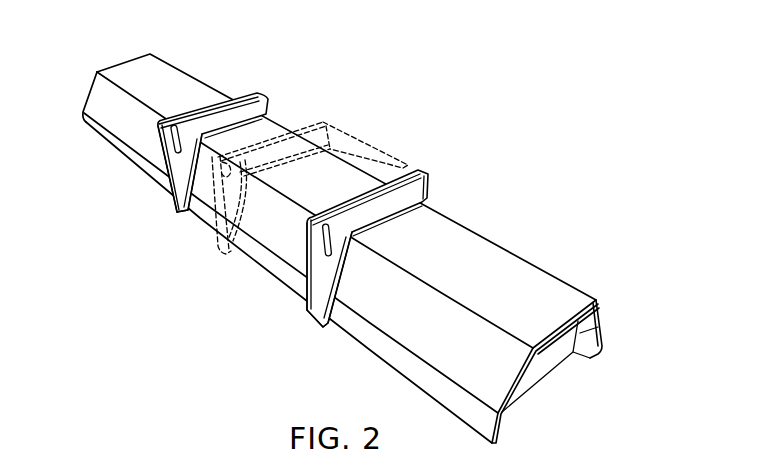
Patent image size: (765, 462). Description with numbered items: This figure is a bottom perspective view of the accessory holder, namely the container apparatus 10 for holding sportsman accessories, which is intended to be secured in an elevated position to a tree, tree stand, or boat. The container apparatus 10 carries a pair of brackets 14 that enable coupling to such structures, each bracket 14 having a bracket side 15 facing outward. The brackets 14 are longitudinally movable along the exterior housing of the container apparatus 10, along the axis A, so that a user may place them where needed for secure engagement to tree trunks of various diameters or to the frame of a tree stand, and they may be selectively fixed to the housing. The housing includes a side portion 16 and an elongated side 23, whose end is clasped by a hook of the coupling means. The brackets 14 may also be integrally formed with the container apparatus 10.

The container apparatus 10 is at (376, 246).
The bracket 14 is at (303, 208).
The bracket side 15 is at (171, 192).
The side portion 16 is at (376, 248).
The elongated side 23 is at (600, 308).
The axis A is at (373, 147).